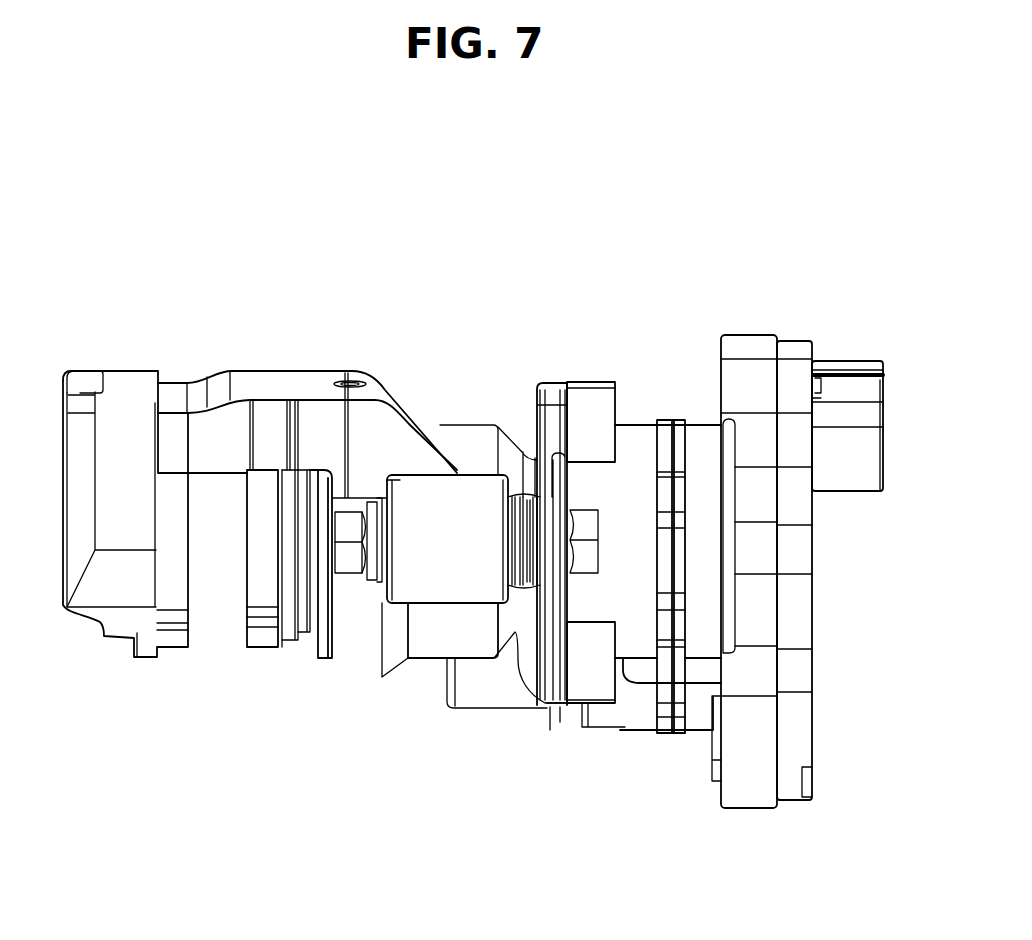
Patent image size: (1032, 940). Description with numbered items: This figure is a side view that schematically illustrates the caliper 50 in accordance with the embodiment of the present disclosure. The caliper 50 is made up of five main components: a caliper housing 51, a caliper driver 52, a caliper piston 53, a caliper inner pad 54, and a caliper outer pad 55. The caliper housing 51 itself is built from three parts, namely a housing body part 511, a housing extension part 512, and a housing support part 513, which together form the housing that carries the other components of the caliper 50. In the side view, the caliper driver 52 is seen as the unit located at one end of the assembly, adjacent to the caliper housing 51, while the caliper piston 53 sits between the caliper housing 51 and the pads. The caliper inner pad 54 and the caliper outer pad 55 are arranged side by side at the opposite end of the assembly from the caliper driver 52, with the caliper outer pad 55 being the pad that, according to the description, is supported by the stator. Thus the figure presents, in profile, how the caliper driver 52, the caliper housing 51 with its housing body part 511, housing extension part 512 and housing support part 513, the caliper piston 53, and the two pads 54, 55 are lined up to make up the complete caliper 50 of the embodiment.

The caliper 50 is at (882, 145).
The caliper housing 51 is at (590, 797).
The housing body part 511 is at (428, 650).
The housing extension part 512 is at (473, 590).
The housing support part 513 is at (548, 570).
The caliper driver 52 is at (808, 620).
The caliper piston 53 is at (318, 642).
The caliper inner pad 54 is at (262, 642).
The caliper outer pad 55 is at (120, 633).